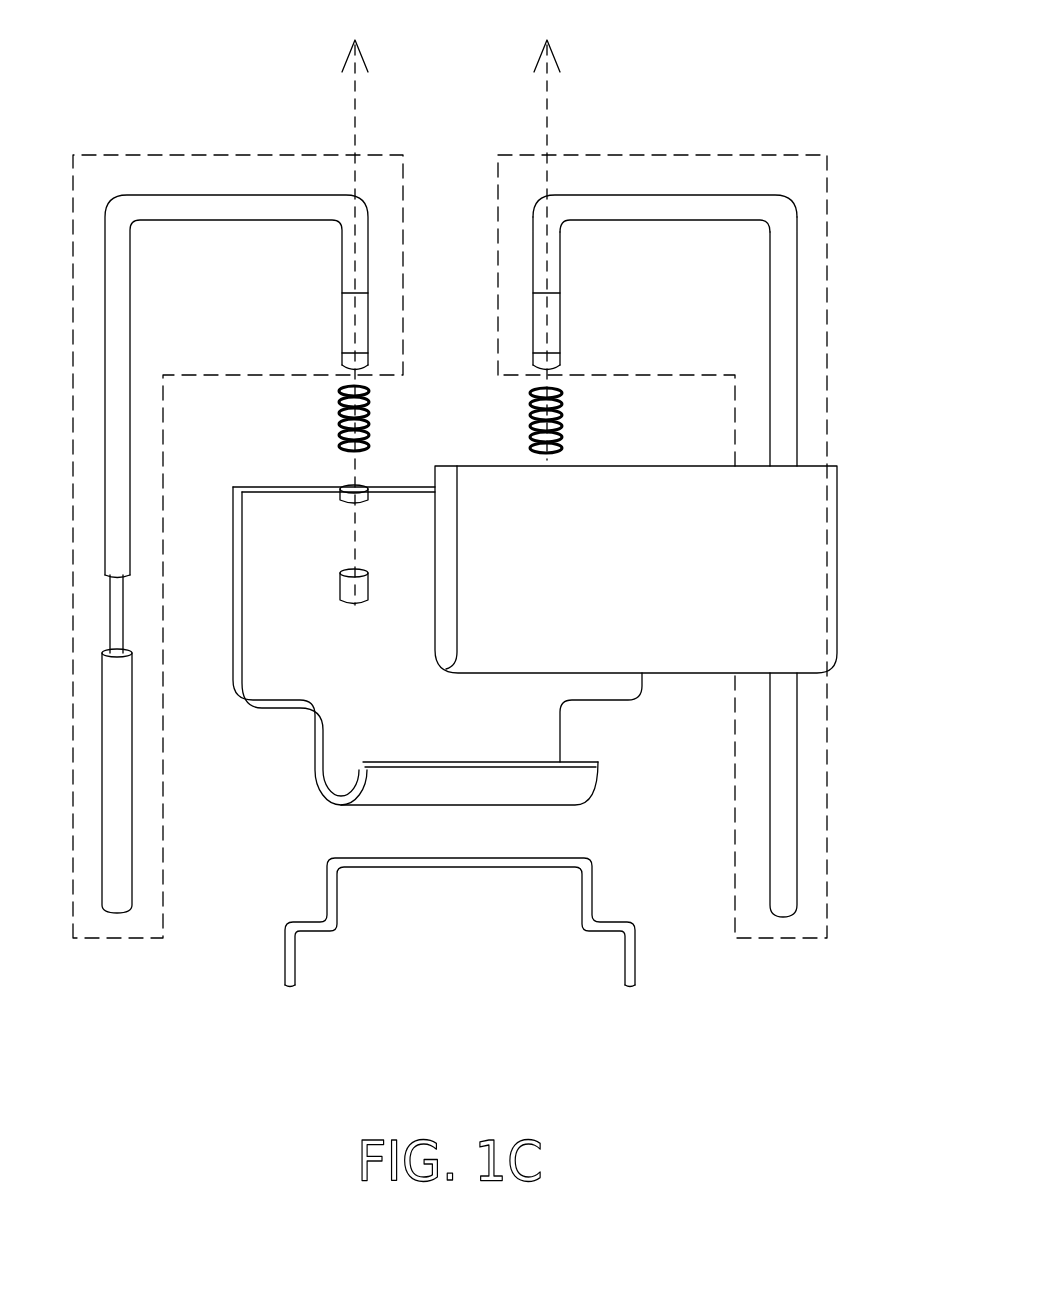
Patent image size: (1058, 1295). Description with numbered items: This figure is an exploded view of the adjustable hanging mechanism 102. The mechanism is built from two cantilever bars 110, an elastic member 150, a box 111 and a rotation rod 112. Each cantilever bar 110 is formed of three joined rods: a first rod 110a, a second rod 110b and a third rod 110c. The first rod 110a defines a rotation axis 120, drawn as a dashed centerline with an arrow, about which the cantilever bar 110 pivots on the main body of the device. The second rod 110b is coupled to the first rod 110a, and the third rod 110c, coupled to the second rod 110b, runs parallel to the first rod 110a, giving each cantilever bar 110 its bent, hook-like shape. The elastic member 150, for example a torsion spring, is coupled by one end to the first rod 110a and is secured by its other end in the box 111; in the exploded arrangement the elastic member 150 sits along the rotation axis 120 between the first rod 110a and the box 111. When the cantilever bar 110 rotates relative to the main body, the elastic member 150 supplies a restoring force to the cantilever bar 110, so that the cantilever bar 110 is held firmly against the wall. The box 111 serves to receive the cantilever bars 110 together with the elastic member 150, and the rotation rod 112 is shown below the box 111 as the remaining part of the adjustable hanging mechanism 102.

The adjustable hanging mechanism 102 is at (940, 31).
The cantilever bar 110 is at (143, 155).
The first rod 110a is at (533, 248).
The second rod 110b is at (663, 195).
The third rod 110c is at (797, 332).
The box 111 is at (815, 635).
The rotation rod 112 is at (285, 960).
The rotation axis 120 is at (355, 97).
The elastic member 150 is at (370, 420).